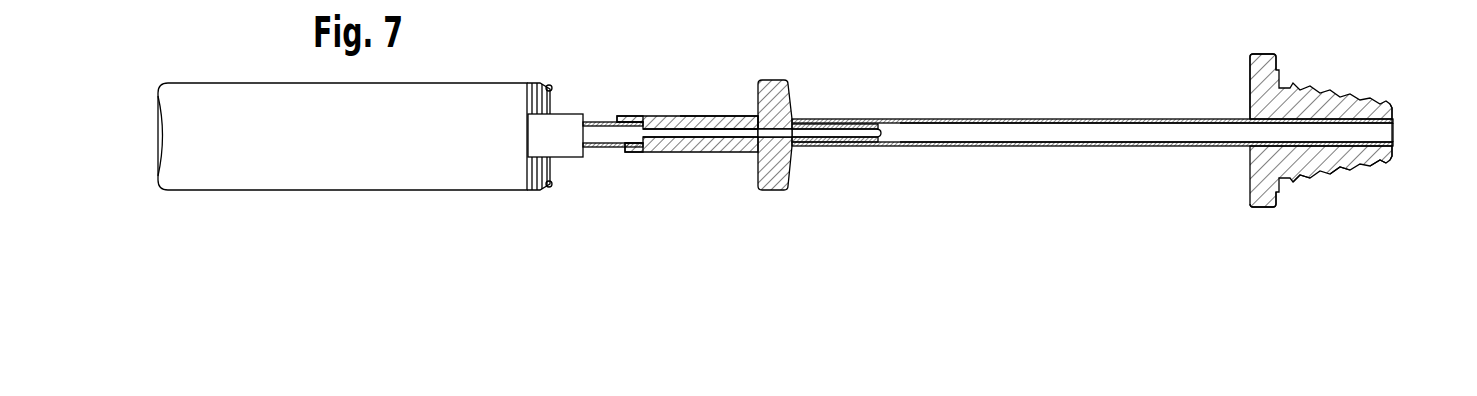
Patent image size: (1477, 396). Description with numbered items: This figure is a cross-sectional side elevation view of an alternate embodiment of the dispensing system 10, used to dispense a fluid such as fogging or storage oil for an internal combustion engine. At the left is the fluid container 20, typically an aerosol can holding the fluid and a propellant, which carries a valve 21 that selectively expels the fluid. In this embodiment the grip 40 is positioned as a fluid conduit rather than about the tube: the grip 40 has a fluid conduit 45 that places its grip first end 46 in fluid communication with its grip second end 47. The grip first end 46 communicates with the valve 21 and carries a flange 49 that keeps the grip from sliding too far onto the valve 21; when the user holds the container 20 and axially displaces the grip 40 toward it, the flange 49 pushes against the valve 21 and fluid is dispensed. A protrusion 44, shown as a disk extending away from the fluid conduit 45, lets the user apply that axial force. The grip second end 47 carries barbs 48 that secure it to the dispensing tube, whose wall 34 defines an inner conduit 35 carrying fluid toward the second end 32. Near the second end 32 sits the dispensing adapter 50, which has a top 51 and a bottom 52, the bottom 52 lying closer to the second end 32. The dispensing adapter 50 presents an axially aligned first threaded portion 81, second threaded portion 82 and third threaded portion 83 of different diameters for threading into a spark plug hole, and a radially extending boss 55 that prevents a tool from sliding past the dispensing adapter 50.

The dispensing system 10 is at (443, 203).
The fluid container 20 is at (452, 82).
The valve 21 is at (603, 118).
The second end 32 is at (1398, 154).
The wall 34 is at (966, 117).
The inner conduit 35 is at (1016, 129).
The grip 40 is at (745, 178).
The protrusion 44 is at (787, 82).
The fluid conduit 45 is at (722, 116).
The grip first end 46 is at (620, 153).
The grip second end 47 is at (881, 147).
The barbs 48 is at (858, 119).
The flange 49 is at (648, 116).
The dispensing adapter 50 is at (1249, 186).
The top 51 is at (1249, 98).
The bottom 52 is at (1394, 108).
The boss 55 is at (1262, 52).
The first threaded portion 81 is at (1380, 170).
The second threaded portion 82 is at (1340, 180).
The third threaded portion 83 is at (1305, 181).